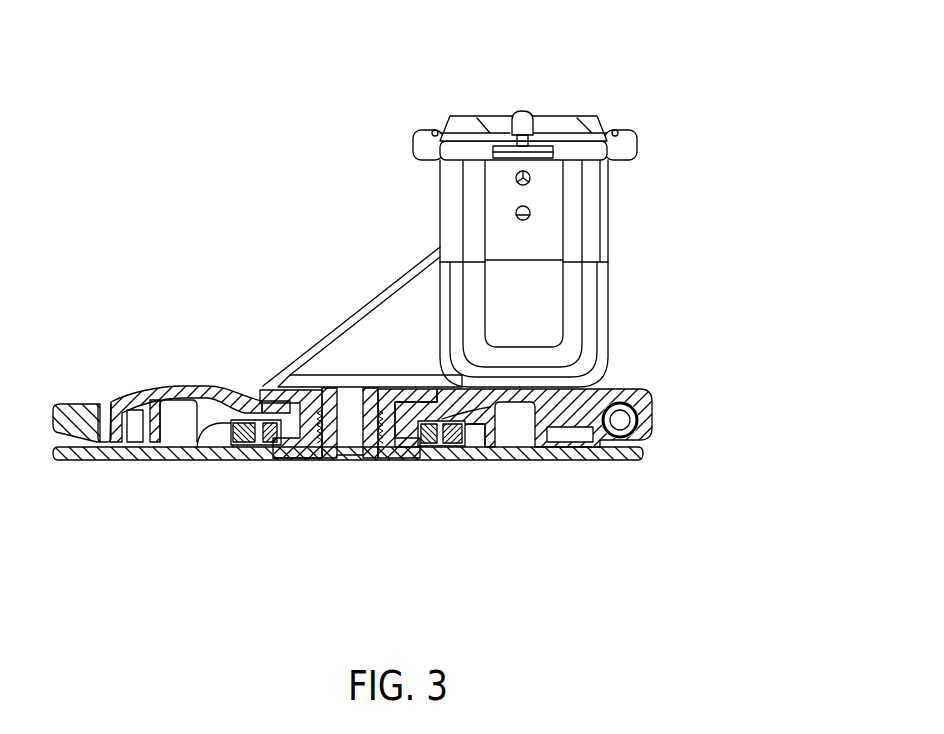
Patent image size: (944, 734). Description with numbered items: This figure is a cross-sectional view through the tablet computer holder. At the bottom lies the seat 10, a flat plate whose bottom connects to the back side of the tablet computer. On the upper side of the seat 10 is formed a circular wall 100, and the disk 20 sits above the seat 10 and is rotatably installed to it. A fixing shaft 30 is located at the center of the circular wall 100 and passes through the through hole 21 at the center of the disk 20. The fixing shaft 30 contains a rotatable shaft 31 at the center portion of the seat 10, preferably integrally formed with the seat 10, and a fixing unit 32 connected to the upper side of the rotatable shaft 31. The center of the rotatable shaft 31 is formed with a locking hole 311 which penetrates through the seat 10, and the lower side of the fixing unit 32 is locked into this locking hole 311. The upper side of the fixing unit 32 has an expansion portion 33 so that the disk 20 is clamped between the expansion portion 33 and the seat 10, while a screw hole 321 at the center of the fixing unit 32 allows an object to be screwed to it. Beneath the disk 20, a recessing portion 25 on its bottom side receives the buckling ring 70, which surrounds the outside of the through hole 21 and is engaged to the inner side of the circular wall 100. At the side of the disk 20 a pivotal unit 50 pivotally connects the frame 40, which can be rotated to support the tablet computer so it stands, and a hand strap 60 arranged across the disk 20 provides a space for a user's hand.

The seat 10 is at (90, 462).
The disk 20 is at (158, 388).
The through hole 21 is at (380, 401).
The recessing portion 25 is at (209, 396).
The fixing shaft 30 is at (357, 421).
The rotatable shaft 31 is at (357, 455).
The locking hole 311 is at (325, 462).
The fixing unit 32 is at (324, 400).
The screw hole 321 is at (350, 382).
The expansion portion 33 is at (260, 400).
The frame 40 is at (78, 403).
The pivotal unit 50 is at (642, 408).
The hand strap 60 is at (583, 106).
The buckling ring 70 is at (265, 445).
The circular wall 100 is at (196, 450).